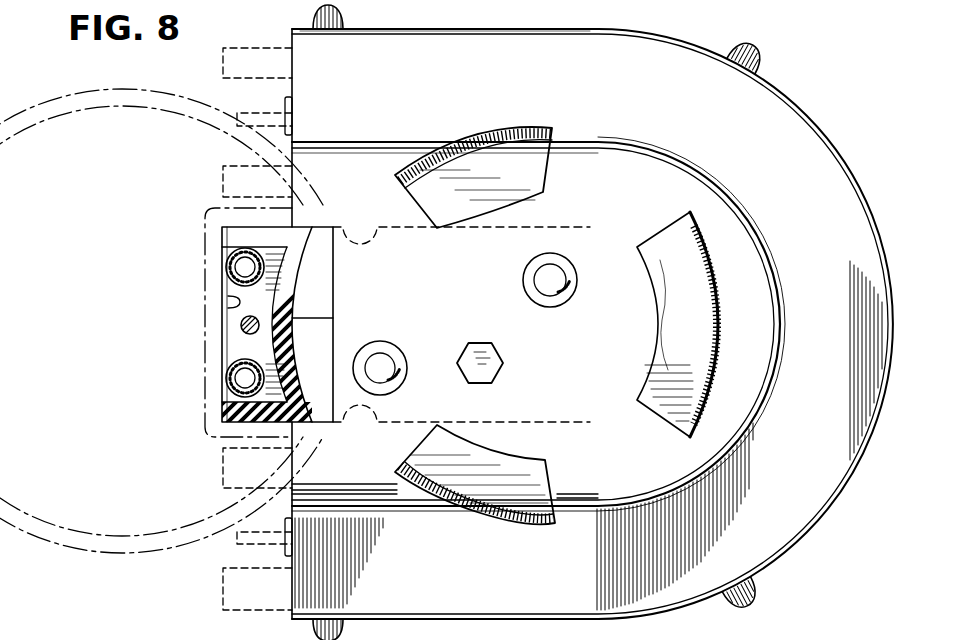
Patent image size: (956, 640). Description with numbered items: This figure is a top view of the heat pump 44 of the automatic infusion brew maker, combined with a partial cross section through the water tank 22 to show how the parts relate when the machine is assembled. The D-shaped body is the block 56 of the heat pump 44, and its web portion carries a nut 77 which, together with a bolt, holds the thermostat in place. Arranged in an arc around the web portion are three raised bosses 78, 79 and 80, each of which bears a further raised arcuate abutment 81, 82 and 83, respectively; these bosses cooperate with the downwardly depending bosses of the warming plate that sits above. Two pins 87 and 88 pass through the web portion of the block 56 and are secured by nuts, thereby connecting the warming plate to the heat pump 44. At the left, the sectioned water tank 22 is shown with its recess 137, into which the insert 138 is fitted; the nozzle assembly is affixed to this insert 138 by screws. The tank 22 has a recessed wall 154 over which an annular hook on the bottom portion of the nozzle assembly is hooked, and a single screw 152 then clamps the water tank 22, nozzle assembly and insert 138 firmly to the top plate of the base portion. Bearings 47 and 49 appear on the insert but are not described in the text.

The water tank 22 is at (76, 95).
The heat pump 44 is at (814, 118).
The upper bearing 47 is at (226, 266).
The lower bearing 49 is at (226, 379).
The block 56 is at (432, 90).
The nut 77 is at (497, 372).
The raised boss 78 is at (527, 175).
The raised boss 79 is at (512, 466).
The raised boss 80 is at (662, 274).
The raised arcuate abutment 81 is at (518, 127).
The raised arcuate abutment 82 is at (522, 520).
The raised arcuate abutment 83 is at (690, 213).
The pin 87 is at (383, 358).
The pin 88 is at (542, 276).
The recess 137 is at (228, 299).
The insert 138 is at (333, 316).
The screw 152 is at (241, 326).
The recessed wall 154 is at (205, 414).